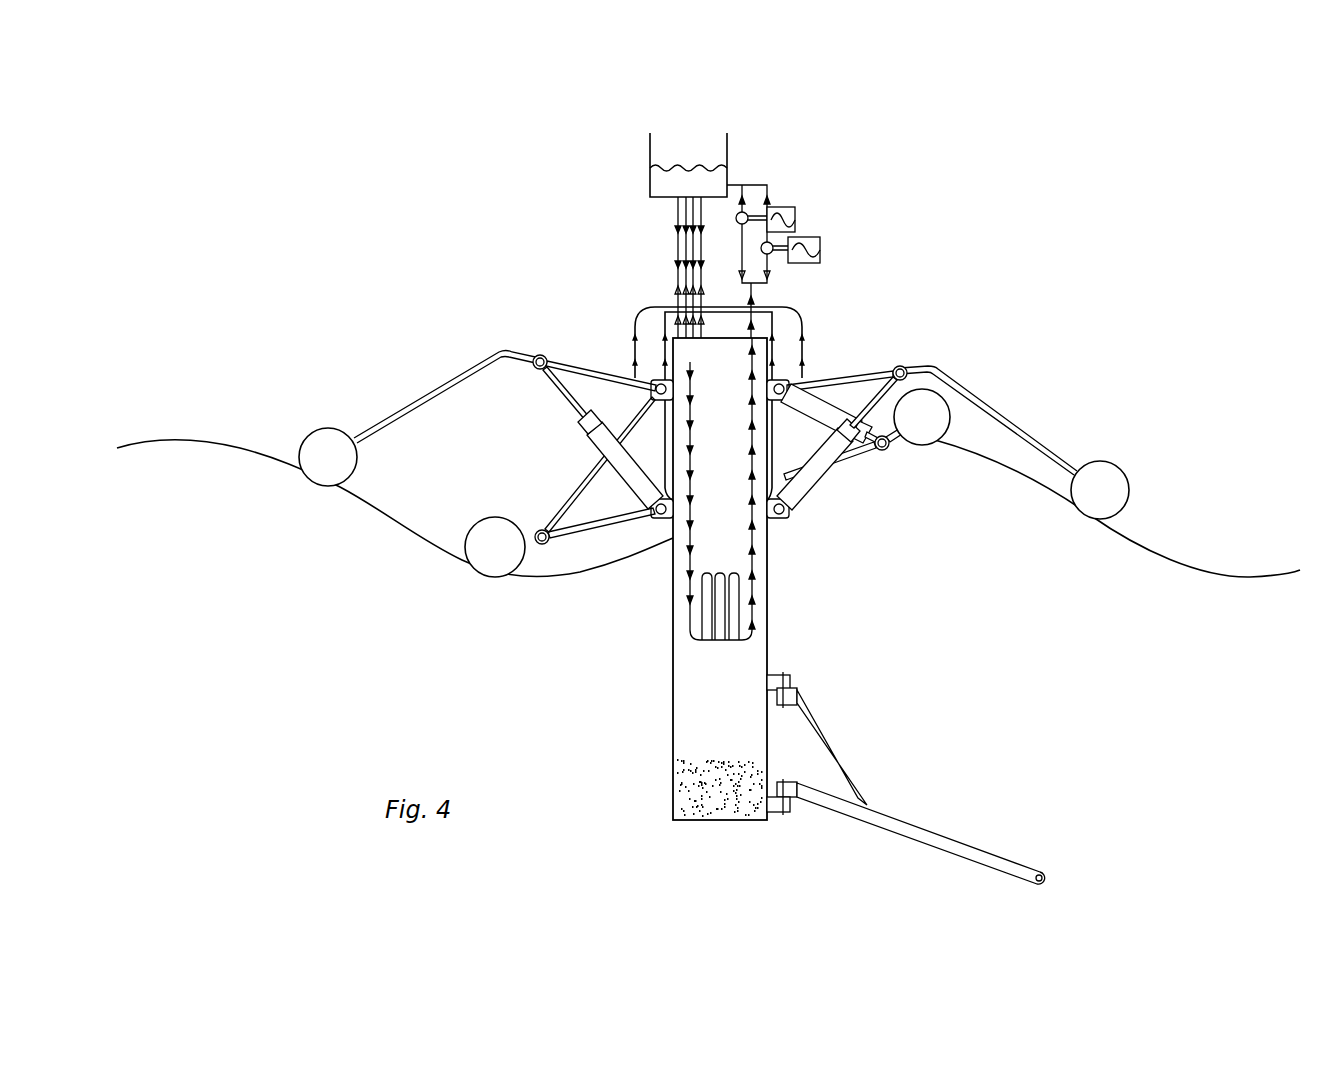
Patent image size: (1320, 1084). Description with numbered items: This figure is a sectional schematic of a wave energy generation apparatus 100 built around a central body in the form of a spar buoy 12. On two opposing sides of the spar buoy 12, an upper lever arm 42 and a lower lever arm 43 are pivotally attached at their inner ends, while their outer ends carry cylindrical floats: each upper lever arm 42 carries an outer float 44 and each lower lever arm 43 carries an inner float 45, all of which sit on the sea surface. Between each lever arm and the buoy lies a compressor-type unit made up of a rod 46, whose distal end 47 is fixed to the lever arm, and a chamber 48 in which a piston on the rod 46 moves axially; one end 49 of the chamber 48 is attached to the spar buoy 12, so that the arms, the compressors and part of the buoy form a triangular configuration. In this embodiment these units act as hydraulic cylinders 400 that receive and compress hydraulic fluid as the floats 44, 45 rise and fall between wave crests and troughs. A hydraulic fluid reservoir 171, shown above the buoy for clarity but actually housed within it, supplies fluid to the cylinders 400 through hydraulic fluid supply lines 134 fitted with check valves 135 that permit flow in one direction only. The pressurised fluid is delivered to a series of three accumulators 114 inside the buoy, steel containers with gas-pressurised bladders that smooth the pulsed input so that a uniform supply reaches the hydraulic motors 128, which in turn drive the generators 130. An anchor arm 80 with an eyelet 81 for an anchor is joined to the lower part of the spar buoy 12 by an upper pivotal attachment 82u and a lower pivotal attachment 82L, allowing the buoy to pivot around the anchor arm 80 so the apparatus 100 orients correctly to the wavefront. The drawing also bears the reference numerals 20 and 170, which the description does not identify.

The spar buoy 12 is at (673, 663).
The sediment / solids 20 is at (720, 800).
The upper lever arms 42 is at (402, 408).
The lower lever arms 43 is at (597, 525).
The outer floats 44 is at (320, 445).
The inner floats 45 is at (475, 568).
The rod 46 is at (570, 495).
The distal end of rod 47 is at (535, 355).
The air chamber 48 is at (627, 430).
The end of air chamber 49 is at (656, 386).
The anchor arm 80 is at (933, 830).
The eyelet 81 is at (1043, 873).
The upper pivotal attachment 82u is at (797, 680).
The lower pivotal attachment 82L is at (788, 815).
The apparatus 100 is at (826, 621).
The accumulators 114 is at (702, 613).
The hydraulic motors 128 is at (770, 252).
The generators 130 is at (805, 237).
The hydraulic fluid supply lines 134 is at (638, 315).
The check valves 135 is at (678, 290).
The feed tank 170 is at (727, 144).
The hydraulic fluid reservoir 171 is at (652, 178).
The cylinders 400 is at (634, 396).